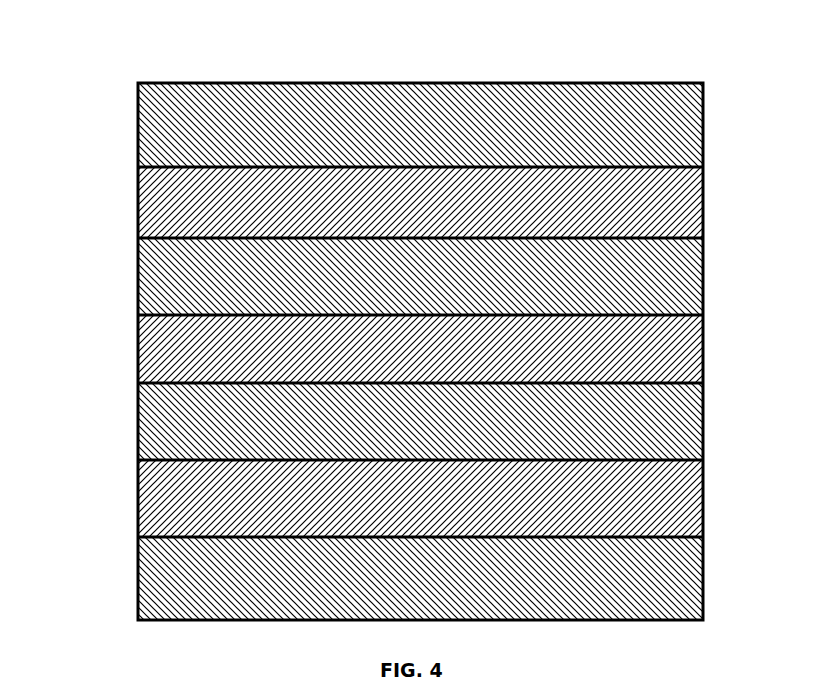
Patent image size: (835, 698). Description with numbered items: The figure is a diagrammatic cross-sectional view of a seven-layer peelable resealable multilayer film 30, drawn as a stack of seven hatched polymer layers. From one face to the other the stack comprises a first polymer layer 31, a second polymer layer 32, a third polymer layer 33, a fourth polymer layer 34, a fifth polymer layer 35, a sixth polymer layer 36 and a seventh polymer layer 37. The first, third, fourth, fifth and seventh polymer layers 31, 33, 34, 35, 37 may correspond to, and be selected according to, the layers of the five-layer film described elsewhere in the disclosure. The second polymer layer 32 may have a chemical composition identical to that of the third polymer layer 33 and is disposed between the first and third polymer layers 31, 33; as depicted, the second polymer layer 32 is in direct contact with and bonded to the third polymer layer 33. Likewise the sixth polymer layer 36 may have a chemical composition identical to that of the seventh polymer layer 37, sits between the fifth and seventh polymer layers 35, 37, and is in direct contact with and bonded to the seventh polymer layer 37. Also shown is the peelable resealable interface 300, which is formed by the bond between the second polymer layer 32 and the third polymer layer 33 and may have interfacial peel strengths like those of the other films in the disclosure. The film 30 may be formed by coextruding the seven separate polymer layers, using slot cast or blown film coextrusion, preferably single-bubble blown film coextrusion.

The seven-layer peelable resealable multilayer film 30 is at (416, 333).
The first polymer layer 31 is at (138, 568).
The second polymer layer 32 is at (703, 507).
The peelable resealable interface 300 is at (703, 455).
The third polymer layer 33 is at (138, 425).
The fourth polymer layer 34 is at (703, 345).
The fifth polymer layer 35 is at (138, 295).
The sixth polymer layer 36 is at (703, 203).
The seventh polymer layer 37 is at (138, 125).